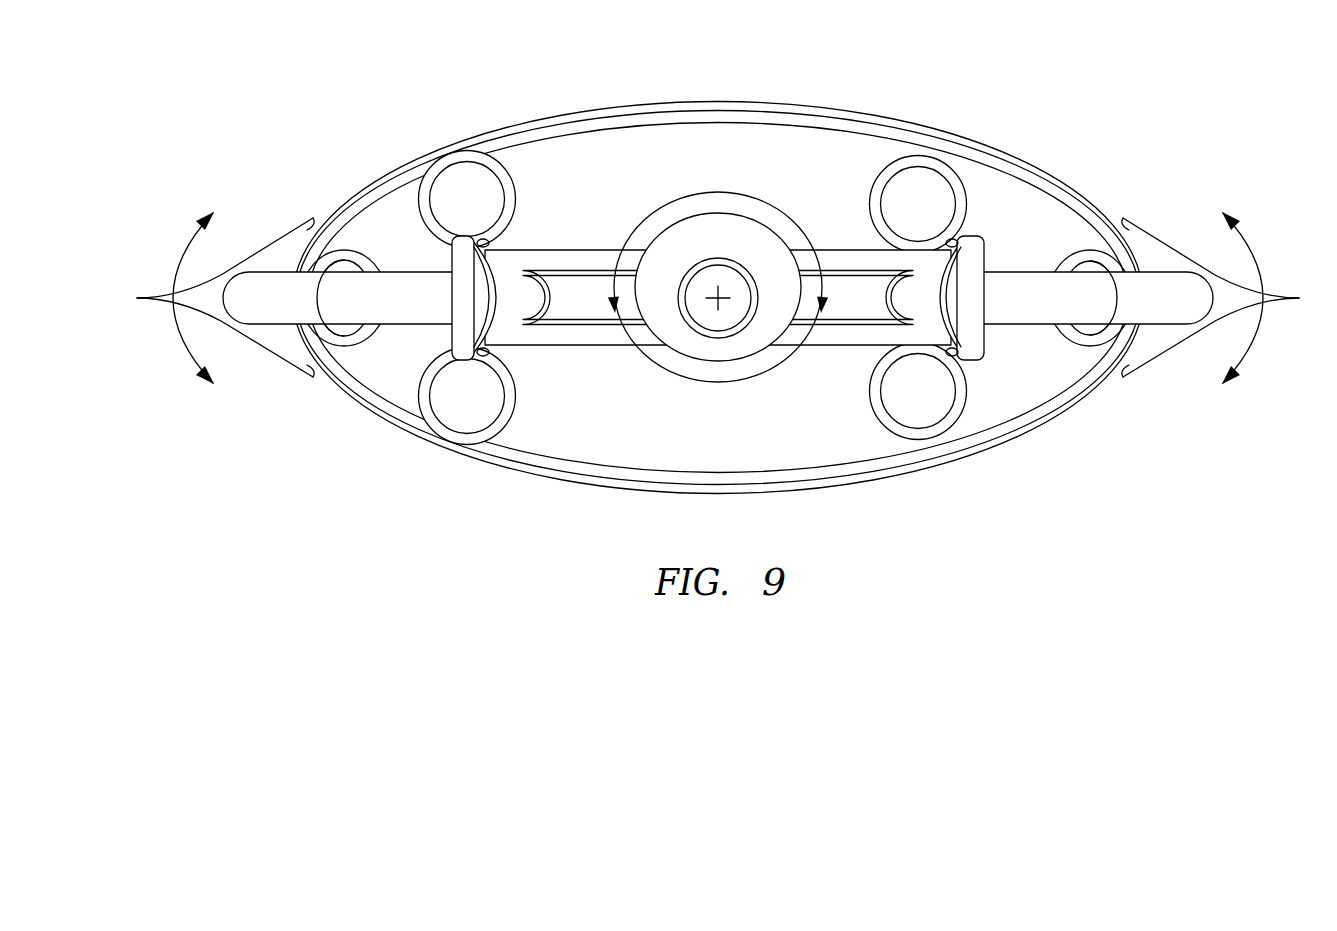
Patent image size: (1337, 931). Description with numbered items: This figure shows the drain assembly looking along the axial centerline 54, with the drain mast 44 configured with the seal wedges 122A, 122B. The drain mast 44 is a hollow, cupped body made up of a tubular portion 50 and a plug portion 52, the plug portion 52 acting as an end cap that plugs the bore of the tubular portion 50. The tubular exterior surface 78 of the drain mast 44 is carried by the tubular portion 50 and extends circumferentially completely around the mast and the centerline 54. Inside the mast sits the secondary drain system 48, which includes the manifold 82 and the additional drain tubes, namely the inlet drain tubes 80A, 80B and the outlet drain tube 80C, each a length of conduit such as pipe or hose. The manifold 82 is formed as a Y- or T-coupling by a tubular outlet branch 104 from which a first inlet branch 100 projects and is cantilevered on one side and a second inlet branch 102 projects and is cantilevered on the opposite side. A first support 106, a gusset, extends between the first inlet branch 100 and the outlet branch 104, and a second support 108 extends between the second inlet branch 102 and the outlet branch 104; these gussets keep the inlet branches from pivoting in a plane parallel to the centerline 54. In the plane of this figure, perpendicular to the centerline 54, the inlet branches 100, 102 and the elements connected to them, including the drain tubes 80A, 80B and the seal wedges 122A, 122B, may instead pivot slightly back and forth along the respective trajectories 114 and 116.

The drain mast 44 is at (718, 256).
The tubular exterior surface 78 is at (733, 102).
The tubular portion 50 is at (645, 103).
The plug portion 52 is at (570, 143).
The second inlet branch 102 is at (920, 250).
The first inlet drain tube 80A is at (367, 257).
The second inlet drain tube 80B is at (1042, 258).
The outlet drain tube 80C is at (754, 266).
The first seal wedge 122A is at (265, 245).
The second seal wedge 122B is at (1167, 232).
The first trajectory 114 is at (190, 355).
The second trajectory 116 is at (1250, 354).
The first inlet branch 100 is at (538, 250).
The first support 106 is at (572, 325).
The second support 108 is at (840, 325).
The drain system 48 is at (729, 300).
The outlet branch 104 is at (700, 382).
The manifold 82 is at (762, 212).
The axial centerline 54 is at (722, 300).